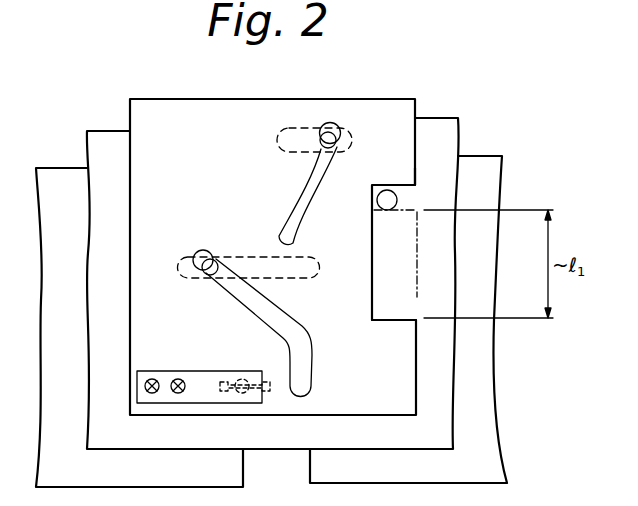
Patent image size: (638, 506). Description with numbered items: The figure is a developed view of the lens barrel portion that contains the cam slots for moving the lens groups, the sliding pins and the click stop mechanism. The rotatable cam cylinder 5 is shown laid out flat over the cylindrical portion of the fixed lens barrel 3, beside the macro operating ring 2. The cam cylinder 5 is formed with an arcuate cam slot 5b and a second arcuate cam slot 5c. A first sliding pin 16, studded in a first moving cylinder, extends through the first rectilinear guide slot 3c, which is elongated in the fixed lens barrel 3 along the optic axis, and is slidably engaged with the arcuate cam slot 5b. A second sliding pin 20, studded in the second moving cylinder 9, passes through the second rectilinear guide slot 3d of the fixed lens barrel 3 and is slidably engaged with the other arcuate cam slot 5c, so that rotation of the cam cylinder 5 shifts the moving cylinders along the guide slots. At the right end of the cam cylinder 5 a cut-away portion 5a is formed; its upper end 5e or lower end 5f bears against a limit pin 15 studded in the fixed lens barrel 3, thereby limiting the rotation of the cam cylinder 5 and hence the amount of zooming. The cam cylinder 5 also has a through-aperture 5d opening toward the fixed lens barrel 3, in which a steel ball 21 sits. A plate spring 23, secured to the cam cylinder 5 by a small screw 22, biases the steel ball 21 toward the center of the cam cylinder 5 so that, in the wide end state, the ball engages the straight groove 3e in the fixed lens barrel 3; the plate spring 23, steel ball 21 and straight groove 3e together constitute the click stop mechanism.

The macro operating ring 2 is at (85, 477).
The second moving cylinder 9 is at (453, 472).
The fixed lens barrel 3 is at (110, 137).
The first rectilinear guide slot 3c is at (302, 274).
The second rectilinear guide slot 3d is at (280, 136).
The straight groove 3e is at (222, 392).
The cam cylinder 5 is at (215, 104).
The cut-away portion 5a is at (380, 264).
The arcuate cam slot 5b is at (311, 366).
The arcuate cam slot 5c is at (296, 213).
The through-aperture 5d is at (248, 375).
The upper end 5e is at (407, 191).
The lower end 5f is at (400, 316).
The limit pin 15 is at (377, 201).
The first sliding pin 16 is at (217, 259).
The second sliding pin 20 is at (338, 137).
The steel ball 21 is at (243, 396).
The small screw 22 is at (175, 379).
The plate spring 23 is at (209, 377).